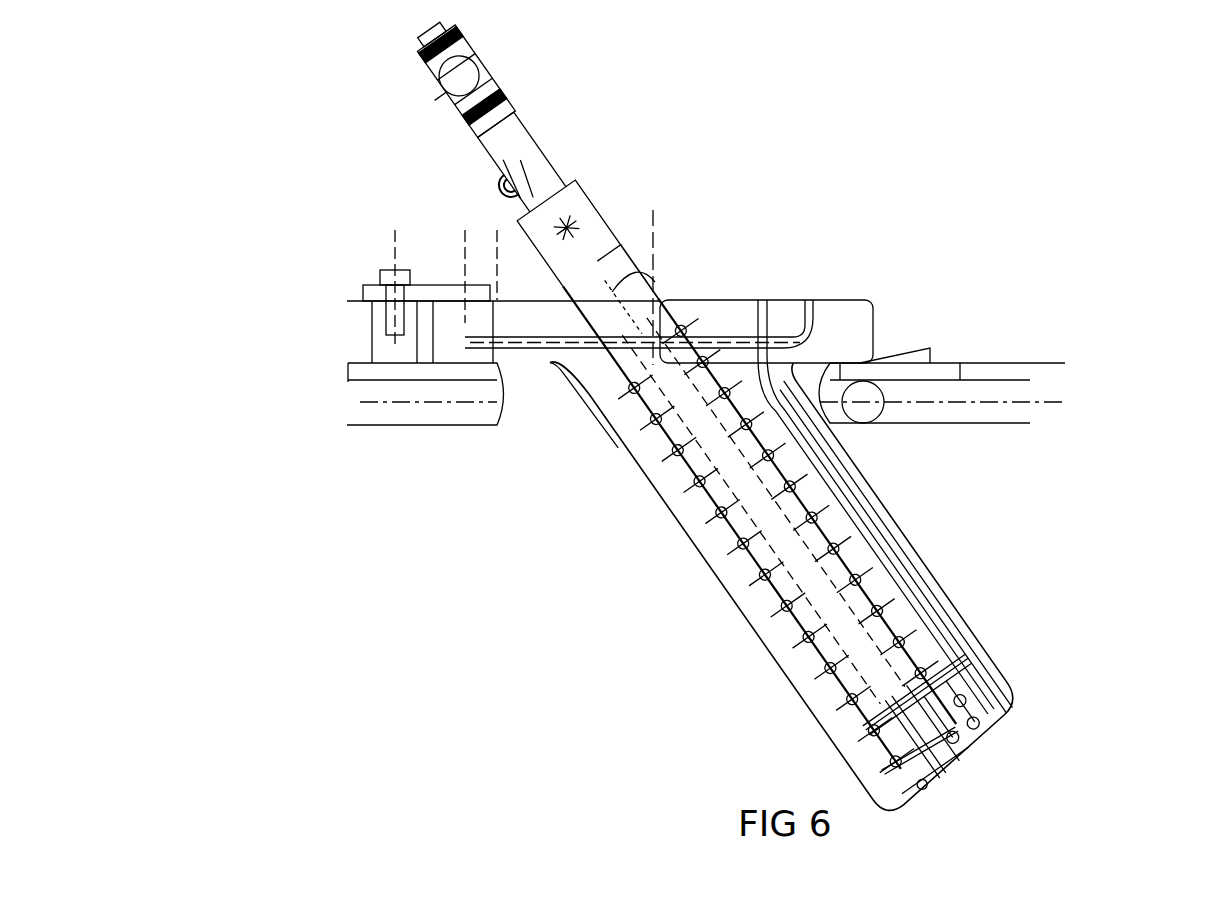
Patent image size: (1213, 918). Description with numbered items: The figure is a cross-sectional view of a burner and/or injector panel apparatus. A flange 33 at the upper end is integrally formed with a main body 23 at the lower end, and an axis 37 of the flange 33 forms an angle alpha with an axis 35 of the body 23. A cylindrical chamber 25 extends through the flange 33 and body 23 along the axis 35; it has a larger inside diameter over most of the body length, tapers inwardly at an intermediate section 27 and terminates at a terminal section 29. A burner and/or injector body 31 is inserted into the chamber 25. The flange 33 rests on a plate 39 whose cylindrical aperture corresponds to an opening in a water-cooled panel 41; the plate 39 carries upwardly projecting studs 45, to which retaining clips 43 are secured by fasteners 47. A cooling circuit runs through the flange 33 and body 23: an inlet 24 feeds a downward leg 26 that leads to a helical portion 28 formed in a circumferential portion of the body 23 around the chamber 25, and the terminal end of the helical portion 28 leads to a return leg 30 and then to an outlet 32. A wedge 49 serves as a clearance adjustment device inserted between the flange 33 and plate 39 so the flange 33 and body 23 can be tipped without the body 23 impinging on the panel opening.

The main body 23 is at (770, 650).
The inlet 24 is at (757, 315).
The cylindrical chamber 25 is at (633, 392).
The downward leg 26 is at (847, 487).
The intermediate section 27 is at (933, 688).
The helical portion 28 is at (753, 575).
The terminal section 29 is at (973, 750).
The return leg 30 is at (547, 350).
The burner and/or injector body 31 is at (623, 240).
The outlet 32 is at (807, 316).
The flange 33 is at (860, 327).
The axis of body 35 is at (630, 245).
The axis of flange 37 is at (660, 238).
The plate 39 is at (347, 373).
The water-cooled panel 41 is at (357, 413).
The retaining clip 43 is at (460, 284).
The stud 45 is at (372, 338).
The fastener 47 is at (383, 278).
The wedge 49 is at (922, 350).